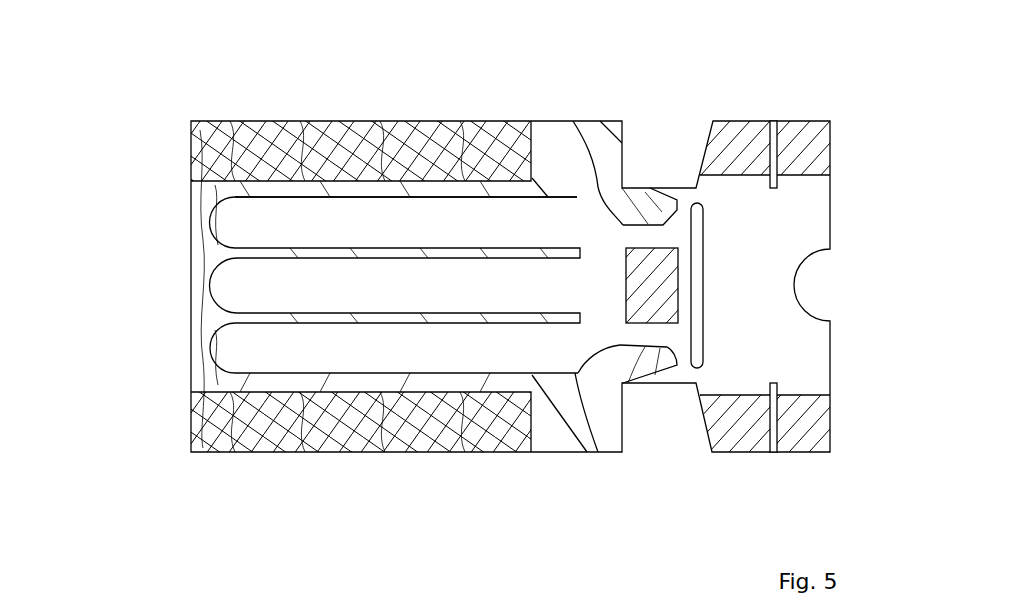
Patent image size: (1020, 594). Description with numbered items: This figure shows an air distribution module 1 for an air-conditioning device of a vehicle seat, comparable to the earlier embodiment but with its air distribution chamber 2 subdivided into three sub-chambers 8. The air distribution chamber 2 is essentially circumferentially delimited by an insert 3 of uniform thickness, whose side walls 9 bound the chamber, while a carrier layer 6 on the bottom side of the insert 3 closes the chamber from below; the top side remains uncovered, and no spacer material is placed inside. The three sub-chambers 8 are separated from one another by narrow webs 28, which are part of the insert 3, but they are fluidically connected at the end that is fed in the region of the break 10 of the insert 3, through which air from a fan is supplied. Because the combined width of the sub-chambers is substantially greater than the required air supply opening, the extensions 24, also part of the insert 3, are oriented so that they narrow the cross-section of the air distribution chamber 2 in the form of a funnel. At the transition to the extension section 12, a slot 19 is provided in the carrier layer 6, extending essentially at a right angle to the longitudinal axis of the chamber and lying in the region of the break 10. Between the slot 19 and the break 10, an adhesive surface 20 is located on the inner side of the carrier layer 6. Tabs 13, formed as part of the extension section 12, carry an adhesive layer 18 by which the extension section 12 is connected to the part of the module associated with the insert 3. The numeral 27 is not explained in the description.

The air distribution module 1 is at (154, 143).
The air distribution chamber 2 is at (268, 362).
The insert 3 is at (553, 167).
The carrier layer 6 is at (227, 220).
The sub-chambers 8 is at (345, 289).
The side walls 9 is at (210, 360).
The break 10 is at (608, 308).
The extension section 12 is at (734, 112).
The tabs 13 is at (692, 142).
The adhesive layer 18 is at (800, 143).
The slot 19 is at (697, 317).
The adhesive surface 20 is at (645, 292).
The extensions 24 is at (662, 217).
The insulation layer 27 is at (333, 175).
The webs 28 is at (472, 327).